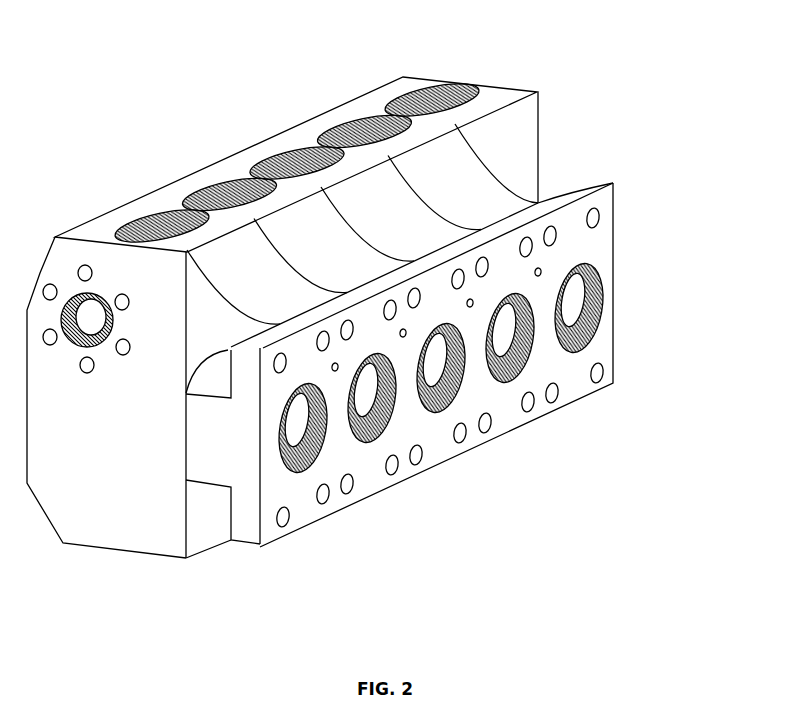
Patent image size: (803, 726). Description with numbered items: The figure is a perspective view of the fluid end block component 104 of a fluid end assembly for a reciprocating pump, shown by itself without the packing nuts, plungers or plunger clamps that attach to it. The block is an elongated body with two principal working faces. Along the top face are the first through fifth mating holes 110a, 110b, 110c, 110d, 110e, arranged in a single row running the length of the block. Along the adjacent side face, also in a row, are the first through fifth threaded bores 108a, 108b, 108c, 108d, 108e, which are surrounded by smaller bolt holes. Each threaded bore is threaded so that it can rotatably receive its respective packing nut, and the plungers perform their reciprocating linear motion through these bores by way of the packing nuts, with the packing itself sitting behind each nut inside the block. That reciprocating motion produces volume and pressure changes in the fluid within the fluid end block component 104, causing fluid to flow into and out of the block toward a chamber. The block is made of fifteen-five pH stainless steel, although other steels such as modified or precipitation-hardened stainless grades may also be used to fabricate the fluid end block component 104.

The fluid end block component 104 is at (167, 520).
The first threaded bore 108a is at (327, 447).
The second threaded bore 108b is at (393, 418).
The third threaded bore 108c is at (463, 388).
The fourth threaded bore 108d is at (533, 356).
The fifth threaded bore 108e is at (602, 328).
The first mating hole 110a is at (187, 250).
The second mating hole 110b is at (254, 218).
The third mating hole 110c is at (321, 187).
The fourth mating hole 110d is at (388, 155).
The fifth mating hole 110e is at (455, 124).